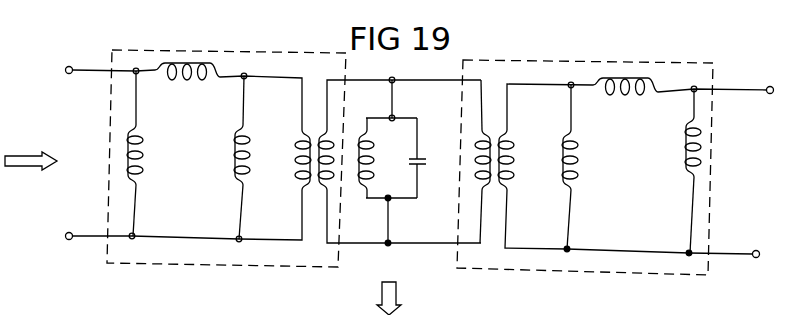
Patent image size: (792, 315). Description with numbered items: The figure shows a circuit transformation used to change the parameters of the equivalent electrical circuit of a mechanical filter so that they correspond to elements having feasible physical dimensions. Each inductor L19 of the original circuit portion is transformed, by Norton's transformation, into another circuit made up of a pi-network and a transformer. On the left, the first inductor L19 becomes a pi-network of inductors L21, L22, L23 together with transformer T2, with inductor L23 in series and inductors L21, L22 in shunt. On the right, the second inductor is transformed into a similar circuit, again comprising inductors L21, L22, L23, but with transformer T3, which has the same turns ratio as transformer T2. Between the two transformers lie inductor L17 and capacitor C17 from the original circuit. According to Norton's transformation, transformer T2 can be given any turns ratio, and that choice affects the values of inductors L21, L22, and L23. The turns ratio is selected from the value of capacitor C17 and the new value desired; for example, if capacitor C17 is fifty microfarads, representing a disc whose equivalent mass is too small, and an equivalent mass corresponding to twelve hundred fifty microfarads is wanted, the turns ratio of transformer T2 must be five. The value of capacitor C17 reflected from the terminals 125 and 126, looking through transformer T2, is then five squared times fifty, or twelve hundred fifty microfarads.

The inductor L19 is at (112, 61).
The inductor L23 is at (406, 92).
The inductor L21 is at (414, 151).
The inductor L22 is at (403, 157).
The transformer T2 is at (306, 192).
The transformer T3 is at (495, 193).
The inductor L17 is at (380, 160).
The capacitor C17 is at (431, 158).
The terminal 125 is at (246, 74).
The terminal 126 is at (241, 241).